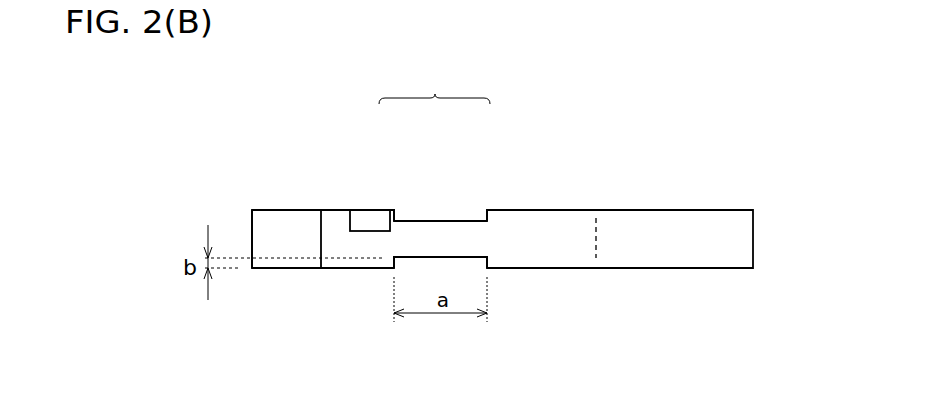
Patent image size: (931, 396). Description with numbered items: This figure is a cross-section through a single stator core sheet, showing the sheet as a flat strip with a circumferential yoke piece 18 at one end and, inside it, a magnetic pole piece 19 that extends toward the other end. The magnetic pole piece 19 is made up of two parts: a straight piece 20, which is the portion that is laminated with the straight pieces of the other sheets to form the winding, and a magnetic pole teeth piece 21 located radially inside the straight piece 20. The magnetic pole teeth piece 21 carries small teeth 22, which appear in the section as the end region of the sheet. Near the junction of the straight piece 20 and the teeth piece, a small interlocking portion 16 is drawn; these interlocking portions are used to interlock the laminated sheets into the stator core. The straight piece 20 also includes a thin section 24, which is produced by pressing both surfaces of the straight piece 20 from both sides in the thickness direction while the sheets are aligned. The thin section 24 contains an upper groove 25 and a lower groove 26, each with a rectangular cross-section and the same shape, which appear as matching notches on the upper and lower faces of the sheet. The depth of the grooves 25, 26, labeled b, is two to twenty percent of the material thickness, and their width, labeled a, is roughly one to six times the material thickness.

The interlocking portion 16 is at (370, 218).
The yoke piece 18 is at (648, 218).
The magnetic pole piece 19 is at (434, 82).
The straight piece 20 is at (507, 218).
The magnetic pole teeth piece 21 is at (338, 220).
The small teeth 22 is at (277, 233).
The thin section 24 is at (458, 243).
The groove 25 is at (435, 220).
The groove 26 is at (420, 259).